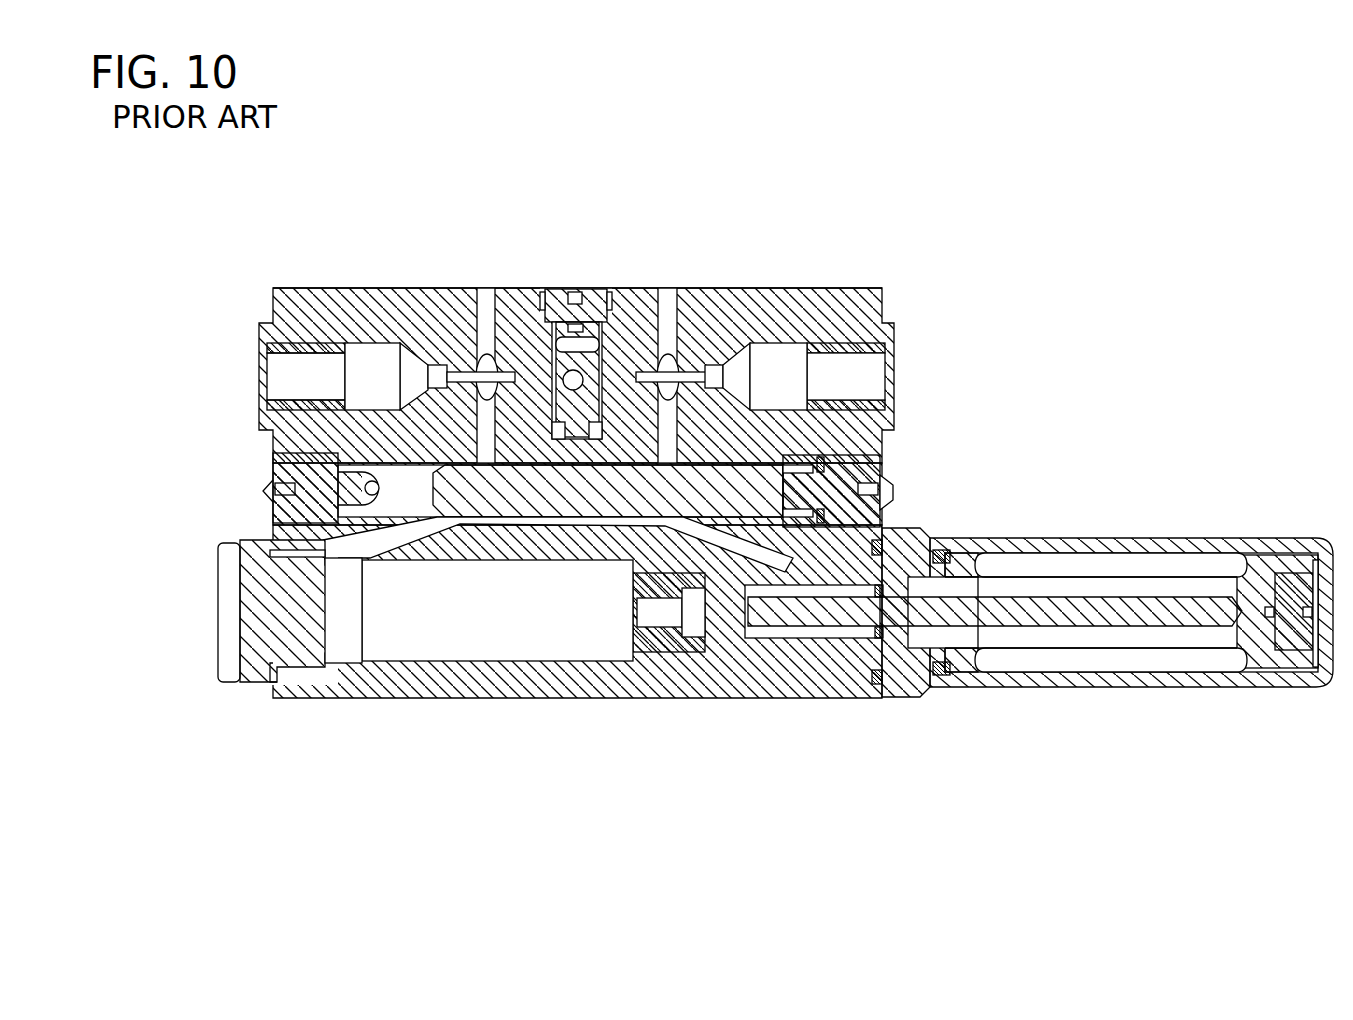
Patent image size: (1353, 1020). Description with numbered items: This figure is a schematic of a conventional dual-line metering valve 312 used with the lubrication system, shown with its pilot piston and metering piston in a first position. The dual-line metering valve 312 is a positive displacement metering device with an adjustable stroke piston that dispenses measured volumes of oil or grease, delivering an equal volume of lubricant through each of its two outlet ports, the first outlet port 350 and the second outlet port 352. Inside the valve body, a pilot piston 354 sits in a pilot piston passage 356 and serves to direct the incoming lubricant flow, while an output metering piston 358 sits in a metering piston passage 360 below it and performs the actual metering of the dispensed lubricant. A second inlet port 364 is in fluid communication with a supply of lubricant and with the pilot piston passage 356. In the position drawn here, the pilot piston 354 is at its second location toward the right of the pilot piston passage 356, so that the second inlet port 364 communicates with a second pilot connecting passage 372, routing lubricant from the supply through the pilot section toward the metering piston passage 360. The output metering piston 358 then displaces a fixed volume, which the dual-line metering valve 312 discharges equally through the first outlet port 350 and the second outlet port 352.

The dual-line metering valve 312 is at (826, 289).
The first outlet port 350 is at (777, 357).
The second outlet port 352 is at (378, 357).
The pilot piston 354 is at (812, 484).
The pilot piston passage 356 is at (822, 490).
The output metering piston 358 is at (698, 665).
The metering piston passage 360 is at (516, 637).
The second inlet port 364 is at (362, 493).
The second pilot connecting passage 372 is at (348, 560).